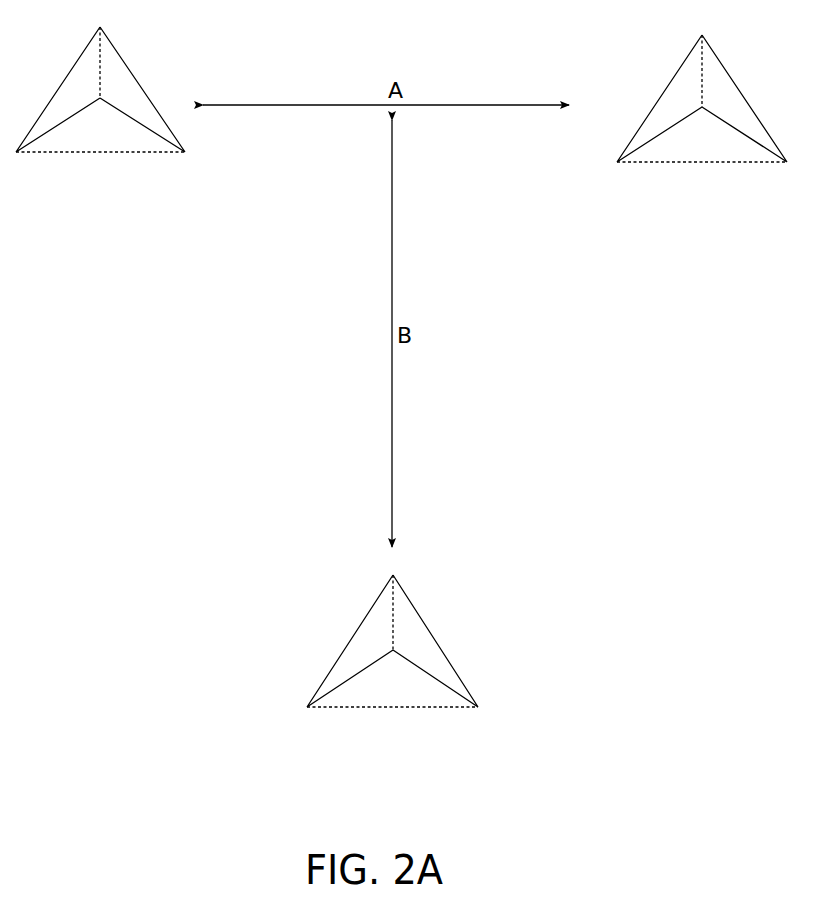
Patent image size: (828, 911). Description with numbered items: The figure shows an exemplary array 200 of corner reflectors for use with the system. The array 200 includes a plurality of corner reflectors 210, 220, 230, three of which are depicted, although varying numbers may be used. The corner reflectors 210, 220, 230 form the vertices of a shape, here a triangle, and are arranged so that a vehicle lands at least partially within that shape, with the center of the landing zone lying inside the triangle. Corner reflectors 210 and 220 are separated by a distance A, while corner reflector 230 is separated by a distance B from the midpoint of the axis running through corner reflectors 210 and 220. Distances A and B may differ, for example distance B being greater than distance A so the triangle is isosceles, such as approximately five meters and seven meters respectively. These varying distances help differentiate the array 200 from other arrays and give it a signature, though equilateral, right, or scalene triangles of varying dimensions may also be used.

The array 200 is at (112, 477).
The corner reflector 210 is at (82, 68).
The corner reflector 220 is at (718, 73).
The corner reflector 230 is at (363, 633).